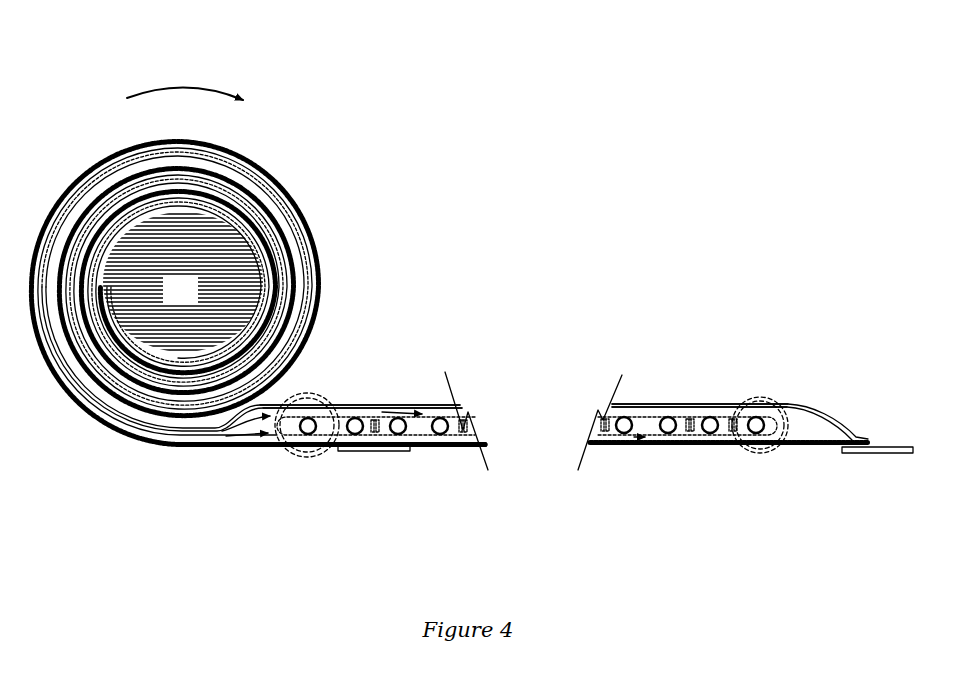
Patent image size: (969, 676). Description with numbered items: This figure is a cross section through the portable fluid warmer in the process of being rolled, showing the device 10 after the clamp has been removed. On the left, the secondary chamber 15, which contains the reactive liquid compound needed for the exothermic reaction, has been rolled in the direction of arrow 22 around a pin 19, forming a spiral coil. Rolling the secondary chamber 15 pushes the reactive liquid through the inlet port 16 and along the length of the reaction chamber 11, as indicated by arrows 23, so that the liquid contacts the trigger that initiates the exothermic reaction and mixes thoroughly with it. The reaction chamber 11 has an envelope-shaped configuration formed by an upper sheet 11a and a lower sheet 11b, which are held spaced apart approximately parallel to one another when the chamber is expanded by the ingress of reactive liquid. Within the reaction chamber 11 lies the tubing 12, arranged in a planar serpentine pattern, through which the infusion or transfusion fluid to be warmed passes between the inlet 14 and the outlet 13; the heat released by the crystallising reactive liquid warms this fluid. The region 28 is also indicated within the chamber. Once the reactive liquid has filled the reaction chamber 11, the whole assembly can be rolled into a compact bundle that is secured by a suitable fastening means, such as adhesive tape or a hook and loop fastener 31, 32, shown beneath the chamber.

The device 10 is at (751, 377).
The reaction chamber 11 is at (430, 448).
The upper sheet 11a is at (652, 404).
The lower sheet 11b is at (655, 447).
The tubing 12 is at (357, 418).
The outlet 13 is at (323, 400).
The inlet 14 is at (757, 453).
The secondary chamber 15 is at (300, 207).
The inlet port 16 is at (206, 452).
The pin 19 is at (190, 290).
The arrow 22 is at (195, 82).
The arrows 23 is at (248, 437).
The channel 28 is at (690, 404).
The hook and loop fastener 31 is at (353, 452).
The hook and loop fastener 32 is at (875, 454).